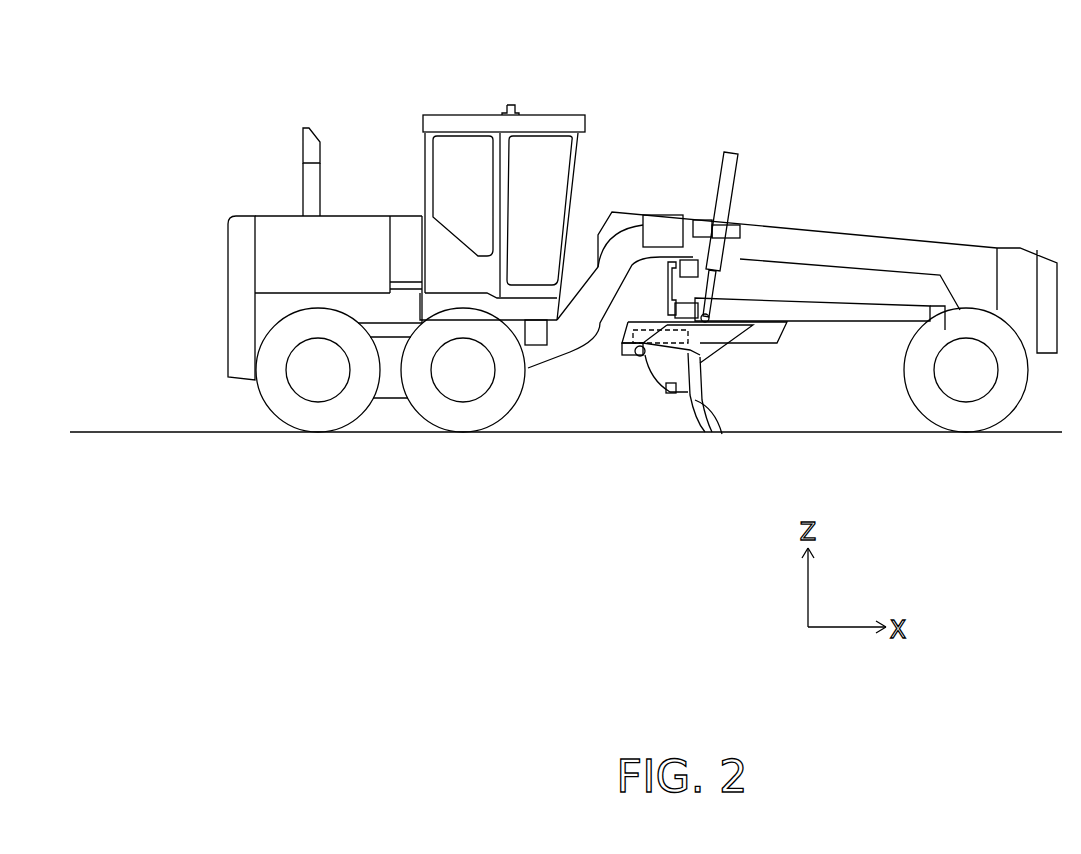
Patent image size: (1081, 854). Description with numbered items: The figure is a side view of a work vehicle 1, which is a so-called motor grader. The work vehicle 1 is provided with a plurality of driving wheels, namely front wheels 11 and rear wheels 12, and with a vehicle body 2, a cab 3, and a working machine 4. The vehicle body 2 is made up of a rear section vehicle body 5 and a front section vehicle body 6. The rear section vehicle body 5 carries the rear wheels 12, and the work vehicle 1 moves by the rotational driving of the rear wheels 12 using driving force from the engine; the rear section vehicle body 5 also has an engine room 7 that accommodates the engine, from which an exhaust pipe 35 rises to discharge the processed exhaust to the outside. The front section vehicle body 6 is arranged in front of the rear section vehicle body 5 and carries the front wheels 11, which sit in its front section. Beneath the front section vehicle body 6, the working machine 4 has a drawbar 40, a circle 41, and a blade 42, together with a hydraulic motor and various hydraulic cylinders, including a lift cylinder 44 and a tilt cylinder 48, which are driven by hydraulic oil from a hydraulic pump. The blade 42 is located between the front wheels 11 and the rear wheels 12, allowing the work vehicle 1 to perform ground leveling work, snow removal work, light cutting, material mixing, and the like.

The work vehicle 1 is at (836, 100).
The vehicle body 2 is at (626, 186).
The cab 3 is at (456, 110).
The working machine 4 is at (754, 410).
The rear section vehicle body 5 is at (354, 191).
The front section vehicle body 6 is at (851, 218).
The engine room 7 is at (283, 230).
The front wheels 11 is at (972, 420).
The rear wheels 12 is at (321, 415).
The exhaust pipe 35 is at (313, 138).
The drawbar 40 is at (873, 322).
The circle 41 is at (776, 330).
The blade 42 is at (708, 420).
The lift cylinder 44 is at (727, 152).
The tilt cylinder 48 is at (657, 365).